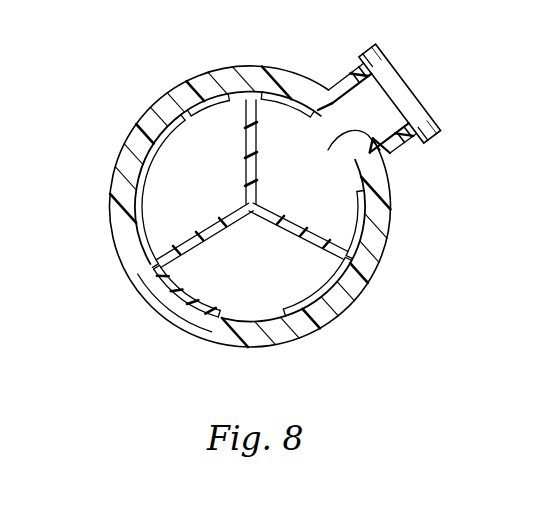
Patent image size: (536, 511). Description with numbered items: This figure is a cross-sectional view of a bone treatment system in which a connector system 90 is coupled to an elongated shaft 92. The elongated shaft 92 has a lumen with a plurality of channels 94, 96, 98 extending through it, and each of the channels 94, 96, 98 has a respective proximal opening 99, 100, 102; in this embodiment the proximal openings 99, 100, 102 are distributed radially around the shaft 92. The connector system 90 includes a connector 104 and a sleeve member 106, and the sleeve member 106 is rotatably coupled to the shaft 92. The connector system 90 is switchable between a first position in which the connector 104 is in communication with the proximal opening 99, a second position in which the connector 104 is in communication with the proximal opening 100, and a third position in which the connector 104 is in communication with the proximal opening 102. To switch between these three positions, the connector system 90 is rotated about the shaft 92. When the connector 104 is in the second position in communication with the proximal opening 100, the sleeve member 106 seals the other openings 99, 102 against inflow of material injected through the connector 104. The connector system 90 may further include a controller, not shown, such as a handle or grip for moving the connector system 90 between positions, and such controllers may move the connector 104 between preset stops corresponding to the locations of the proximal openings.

The connector system 90 is at (163, 68).
The elongated shaft 92 is at (131, 259).
The channel 94 is at (223, 152).
The channel 96 is at (298, 213).
The channel 98 is at (209, 240).
The proximal opening 99 is at (178, 152).
The proximal opening 100 is at (388, 148).
The proximal opening 102 is at (252, 316).
The connector 104 is at (410, 88).
The sleeve member 106 is at (113, 193).